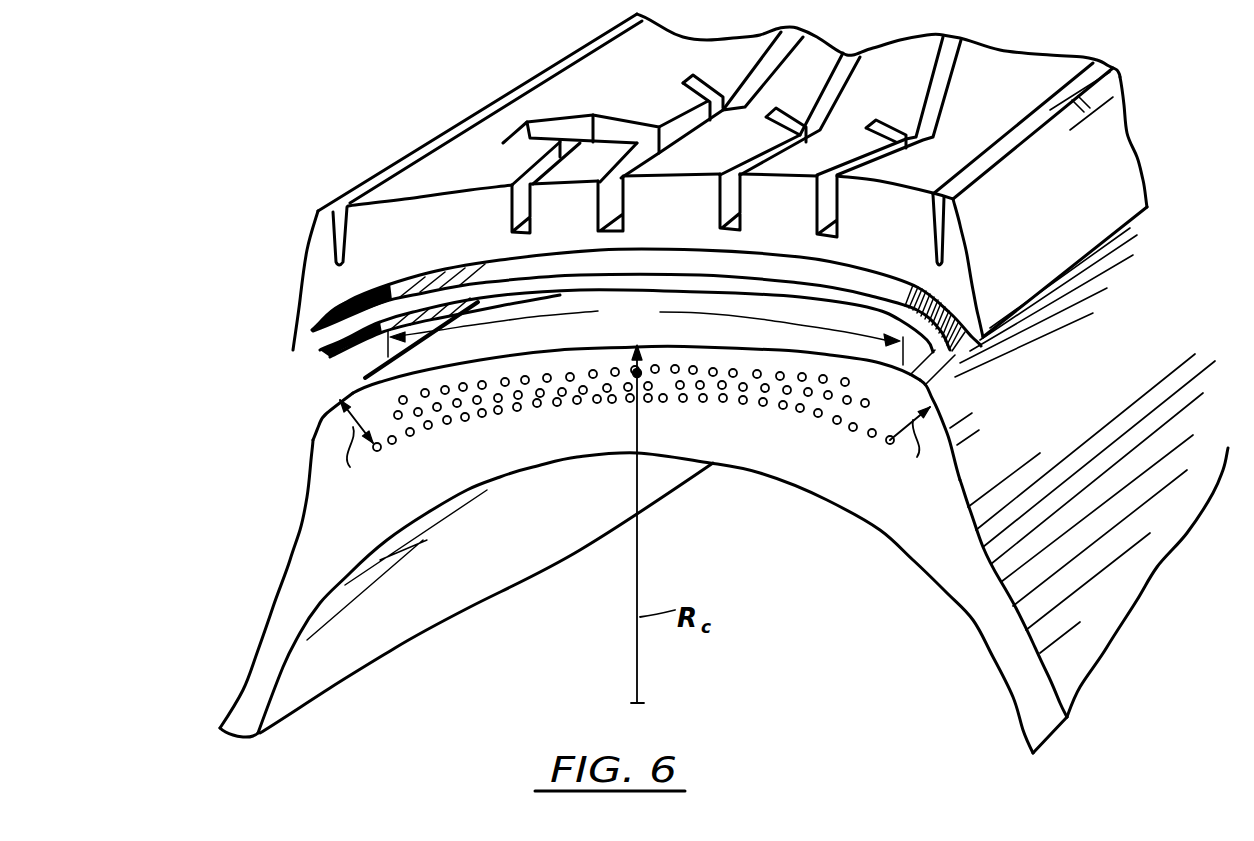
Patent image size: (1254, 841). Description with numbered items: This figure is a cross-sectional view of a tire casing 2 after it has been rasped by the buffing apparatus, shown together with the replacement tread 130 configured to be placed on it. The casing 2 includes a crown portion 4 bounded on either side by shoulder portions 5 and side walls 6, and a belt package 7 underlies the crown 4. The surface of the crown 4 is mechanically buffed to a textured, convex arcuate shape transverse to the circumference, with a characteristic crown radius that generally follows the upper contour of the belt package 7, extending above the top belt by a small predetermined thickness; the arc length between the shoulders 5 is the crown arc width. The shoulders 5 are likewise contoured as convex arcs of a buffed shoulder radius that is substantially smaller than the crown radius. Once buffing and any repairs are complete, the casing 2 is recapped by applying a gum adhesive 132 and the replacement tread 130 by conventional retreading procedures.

The replacement tread 130 is at (297, 306).
The gum adhesive 132 is at (318, 357).
The tire casing 2 is at (290, 557).
The crown portion 4 is at (703, 343).
The shoulder portions 5 is at (337, 400).
The side walls 6 is at (247, 687).
The belt package 7 is at (780, 409).